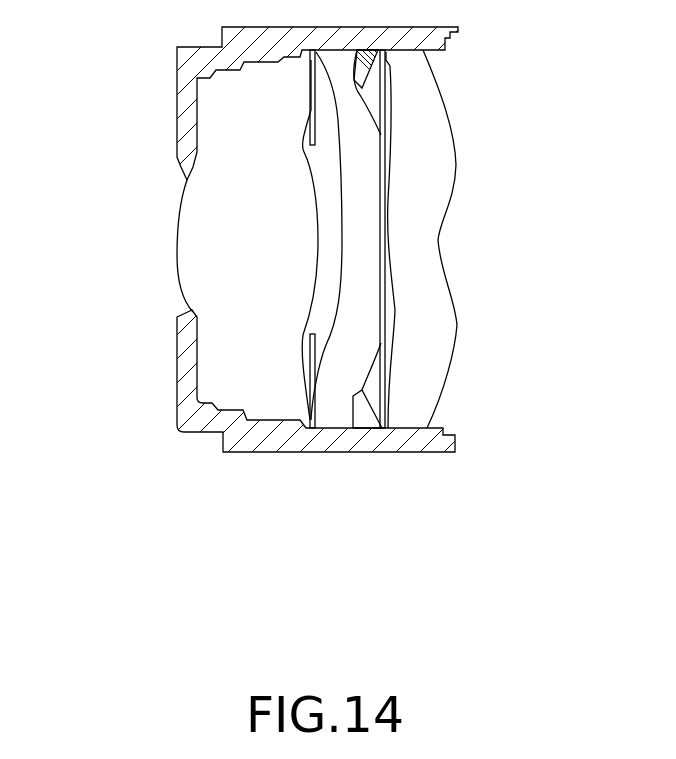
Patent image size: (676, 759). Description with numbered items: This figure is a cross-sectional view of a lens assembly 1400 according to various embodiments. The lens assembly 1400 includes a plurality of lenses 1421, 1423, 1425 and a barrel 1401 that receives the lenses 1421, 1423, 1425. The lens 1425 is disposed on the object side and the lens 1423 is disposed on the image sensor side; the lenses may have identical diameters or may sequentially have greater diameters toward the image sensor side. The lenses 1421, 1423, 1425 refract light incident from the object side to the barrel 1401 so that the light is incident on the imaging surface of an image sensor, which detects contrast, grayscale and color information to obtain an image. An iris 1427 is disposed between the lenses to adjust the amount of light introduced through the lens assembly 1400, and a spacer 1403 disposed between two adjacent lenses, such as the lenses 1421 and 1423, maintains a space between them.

The lens assembly 1400 is at (125, 134).
The barrel 1401 is at (198, 427).
The spacer 1403 is at (366, 430).
The lens 1421 is at (325, 430).
The lens 1423 is at (433, 378).
The lens 1425 is at (267, 395).
The iris 1427 is at (312, 350).